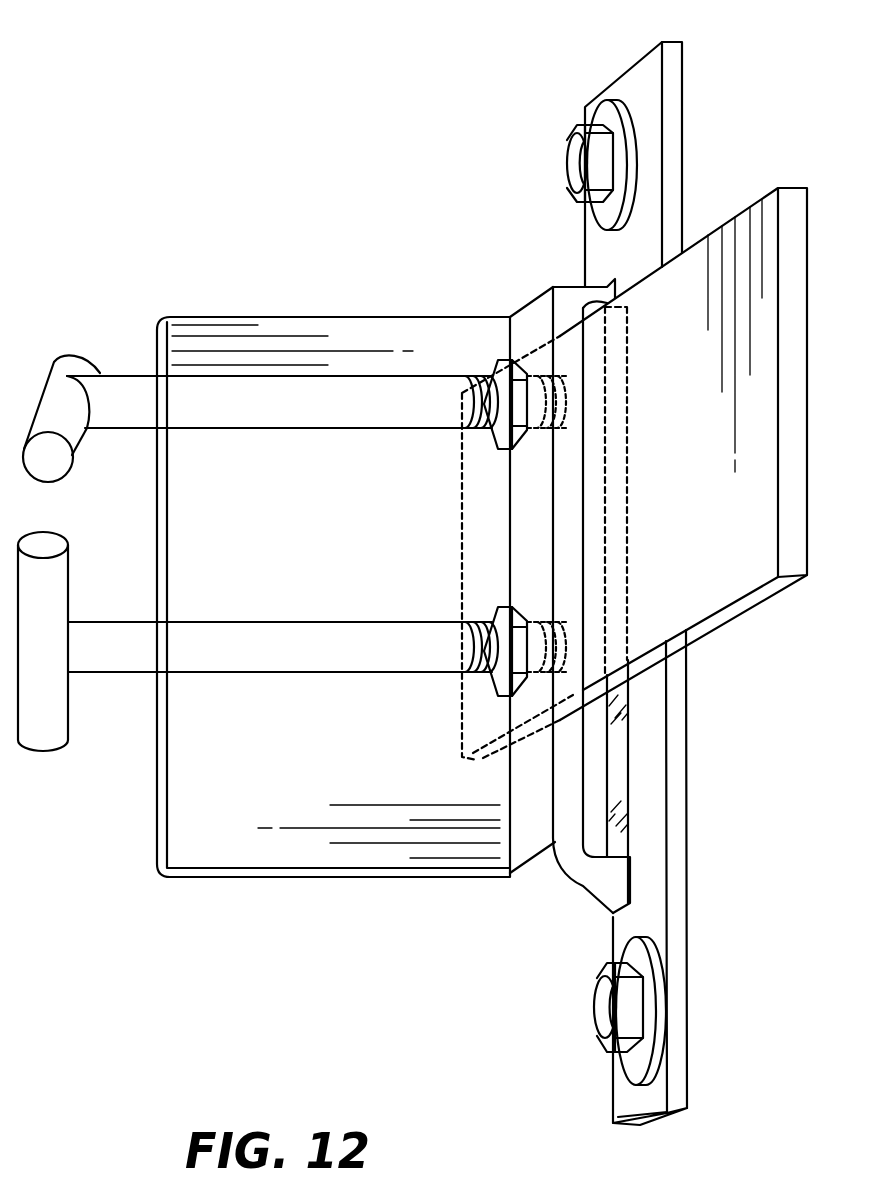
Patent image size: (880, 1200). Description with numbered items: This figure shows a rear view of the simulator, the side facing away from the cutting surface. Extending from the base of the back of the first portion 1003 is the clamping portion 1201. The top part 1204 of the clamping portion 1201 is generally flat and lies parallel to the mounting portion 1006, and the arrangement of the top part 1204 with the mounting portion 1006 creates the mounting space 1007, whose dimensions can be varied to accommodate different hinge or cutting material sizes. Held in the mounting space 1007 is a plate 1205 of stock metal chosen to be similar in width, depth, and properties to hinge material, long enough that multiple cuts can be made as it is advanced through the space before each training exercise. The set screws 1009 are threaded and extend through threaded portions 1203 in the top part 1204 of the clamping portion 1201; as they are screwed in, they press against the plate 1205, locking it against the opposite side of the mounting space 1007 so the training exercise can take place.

The first portion 1003 is at (228, 839).
The mounting portion 1006 is at (630, 62).
The mounting space 1007 is at (598, 808).
The set screws 1009 is at (287, 417).
The clamping portion 1201 is at (540, 287).
The threaded portions 1203 is at (490, 367).
The top part 1204 is at (512, 540).
The plate 1205 is at (698, 590).